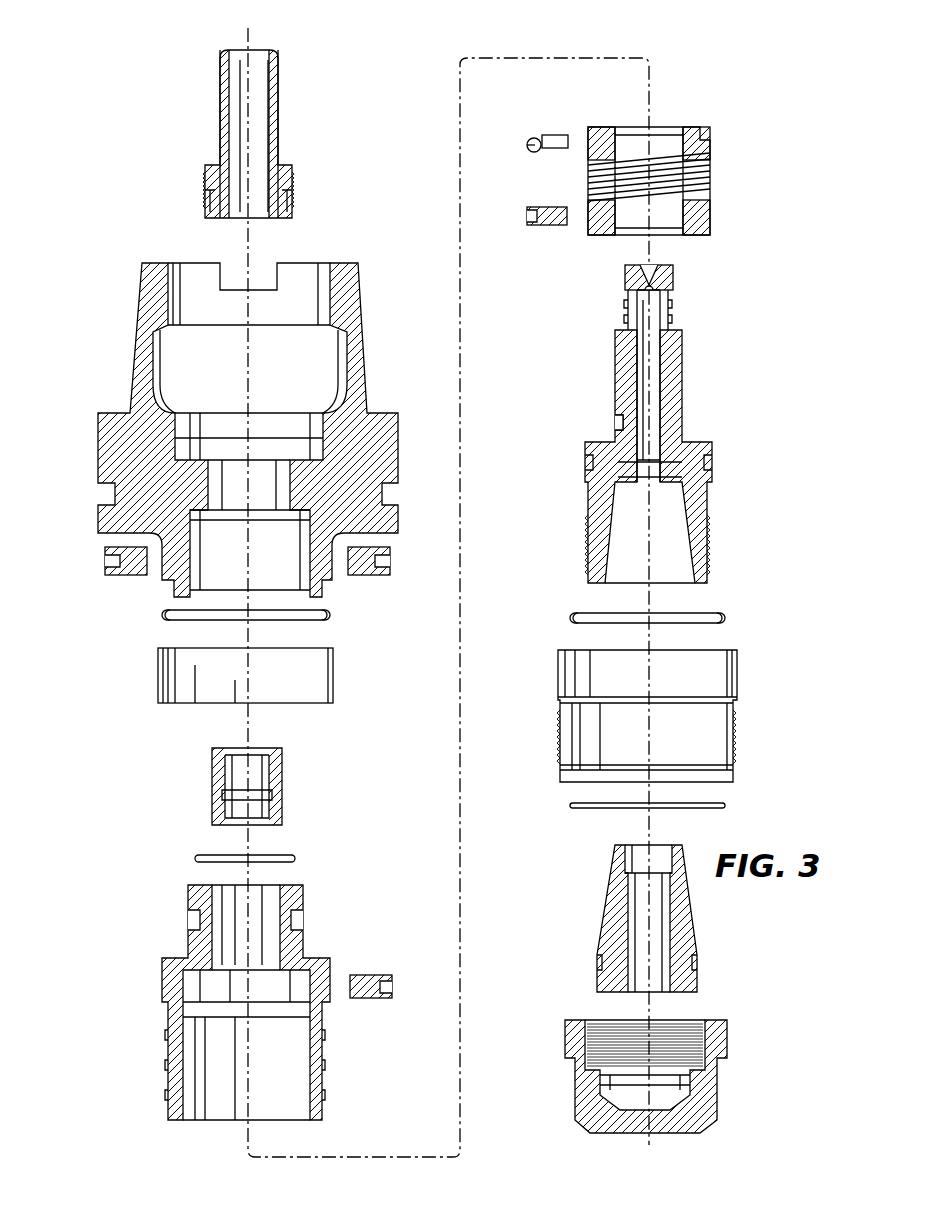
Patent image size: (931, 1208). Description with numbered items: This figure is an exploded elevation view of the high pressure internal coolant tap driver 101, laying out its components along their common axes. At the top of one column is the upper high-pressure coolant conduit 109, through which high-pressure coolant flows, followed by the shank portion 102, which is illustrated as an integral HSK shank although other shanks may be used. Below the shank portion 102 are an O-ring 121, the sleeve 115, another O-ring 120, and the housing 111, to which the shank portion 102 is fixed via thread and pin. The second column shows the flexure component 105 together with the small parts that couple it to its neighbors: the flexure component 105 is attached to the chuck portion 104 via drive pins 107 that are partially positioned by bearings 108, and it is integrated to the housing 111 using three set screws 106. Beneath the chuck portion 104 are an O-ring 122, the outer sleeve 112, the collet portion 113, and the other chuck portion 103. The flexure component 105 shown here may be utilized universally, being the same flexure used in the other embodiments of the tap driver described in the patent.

The tap driver 101 is at (166, 68).
The shank portion 102 is at (398, 435).
The chuck portion 103 is at (727, 1080).
The chuck portion 104 is at (684, 373).
The flexure component 105 is at (712, 215).
The set screws 106 is at (548, 225).
The drive pins 107 is at (557, 135).
The bearings 108 is at (527, 145).
The high-pressure coolant conduit 109 is at (280, 120).
The housing 111 is at (170, 978).
The outer sleeve 112 is at (735, 752).
The collet portion 113 is at (683, 977).
The sleeve 115 is at (333, 675).
The O-ring 120 is at (297, 858).
The O-ring 121 is at (332, 615).
The O-ring 122 is at (727, 618).